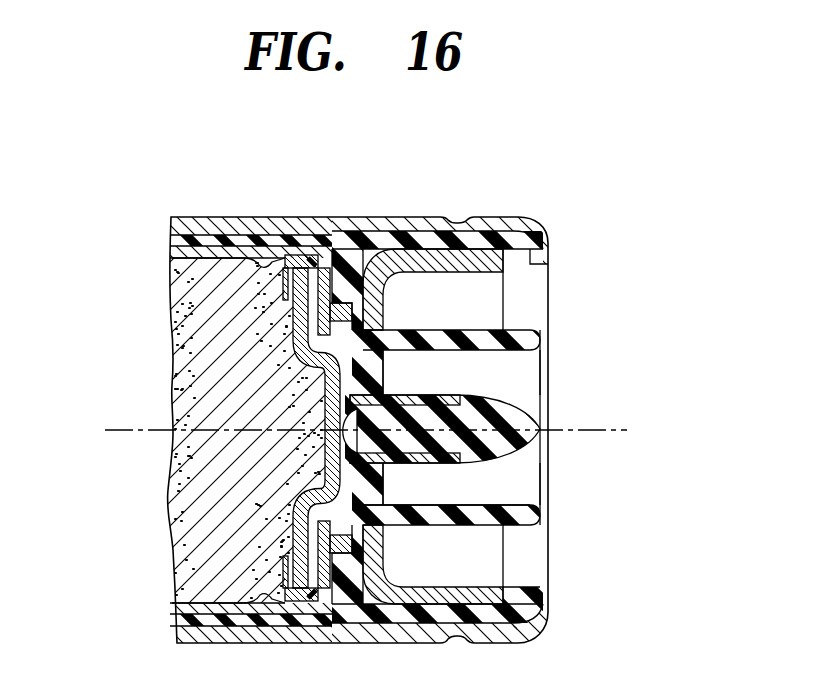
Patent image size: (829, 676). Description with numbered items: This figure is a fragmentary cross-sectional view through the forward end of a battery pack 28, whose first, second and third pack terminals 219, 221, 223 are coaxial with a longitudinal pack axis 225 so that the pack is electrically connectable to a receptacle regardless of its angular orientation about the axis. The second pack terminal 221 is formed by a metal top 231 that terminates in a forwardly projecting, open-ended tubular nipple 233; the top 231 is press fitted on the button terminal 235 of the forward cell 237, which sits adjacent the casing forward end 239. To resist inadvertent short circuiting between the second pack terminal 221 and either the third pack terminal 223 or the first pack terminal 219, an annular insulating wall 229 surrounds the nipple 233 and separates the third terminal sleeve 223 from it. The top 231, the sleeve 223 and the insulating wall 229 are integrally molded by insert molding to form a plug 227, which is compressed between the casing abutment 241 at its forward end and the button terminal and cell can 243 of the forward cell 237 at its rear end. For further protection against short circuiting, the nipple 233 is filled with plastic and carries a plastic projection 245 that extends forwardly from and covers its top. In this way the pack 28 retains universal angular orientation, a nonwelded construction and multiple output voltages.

The battery pack 28 is at (212, 164).
The first pack terminal 219 is at (410, 217).
The second pack terminal 221 is at (516, 369).
The third pack terminal 223 is at (348, 217).
The longitudinal pack axis 225 is at (613, 430).
The plug 227 is at (518, 467).
The insulating wall 229 is at (527, 525).
The metal top 231 is at (298, 318).
The tubular nipple 233 is at (433, 466).
The button terminal 235 is at (325, 376).
The forward cell 237 is at (232, 484).
The casing forward end 239 is at (514, 217).
The casing abutment 241 is at (547, 242).
The cell can 243 is at (210, 603).
The plastic projection 245 is at (538, 411).